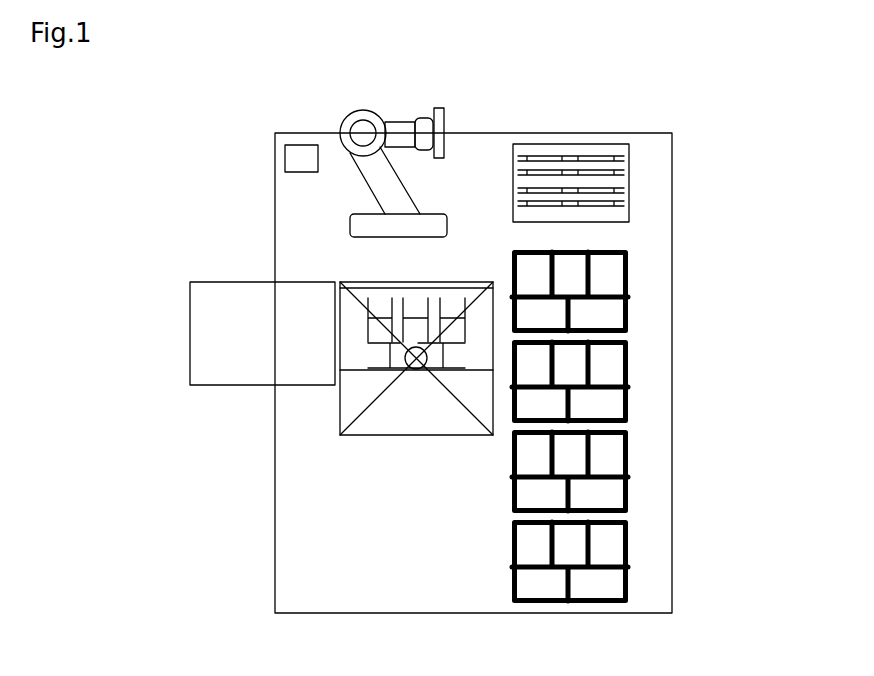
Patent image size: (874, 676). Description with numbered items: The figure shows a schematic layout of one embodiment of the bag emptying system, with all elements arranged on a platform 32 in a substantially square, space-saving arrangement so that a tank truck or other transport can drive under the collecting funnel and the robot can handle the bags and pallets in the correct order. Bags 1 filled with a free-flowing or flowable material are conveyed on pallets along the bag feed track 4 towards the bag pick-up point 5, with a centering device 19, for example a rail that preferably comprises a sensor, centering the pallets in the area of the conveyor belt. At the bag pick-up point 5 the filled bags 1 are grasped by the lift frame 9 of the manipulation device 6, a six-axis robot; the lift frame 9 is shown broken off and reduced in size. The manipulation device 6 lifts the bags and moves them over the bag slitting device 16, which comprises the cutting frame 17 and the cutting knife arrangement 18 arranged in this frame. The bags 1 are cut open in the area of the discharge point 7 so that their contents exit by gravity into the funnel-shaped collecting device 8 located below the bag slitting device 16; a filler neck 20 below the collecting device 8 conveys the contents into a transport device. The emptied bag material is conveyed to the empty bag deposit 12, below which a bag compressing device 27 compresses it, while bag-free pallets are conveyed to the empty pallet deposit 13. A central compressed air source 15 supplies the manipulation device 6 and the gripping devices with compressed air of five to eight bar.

The bag 1 is at (598, 260).
The bag feed track 4 is at (626, 418).
The bag pick-up point 5 is at (647, 305).
The manipulation device 6 is at (420, 126).
The discharge point 7 is at (440, 387).
The collecting device 8 is at (382, 407).
The lift frame 9 is at (438, 150).
The empty bag deposit 12 is at (205, 333).
The bag compressing device 27 is at (207, 308).
The empty pallet deposit 13 is at (647, 153).
The compressed air source 15 is at (292, 158).
The bag slitting device 16 is at (556, 450).
The cutting frame 17 is at (485, 315).
The cutting knife arrangement 18 is at (487, 343).
The centering device 19 is at (645, 457).
The filler neck 20 is at (390, 437).
The platform 32 is at (320, 562).